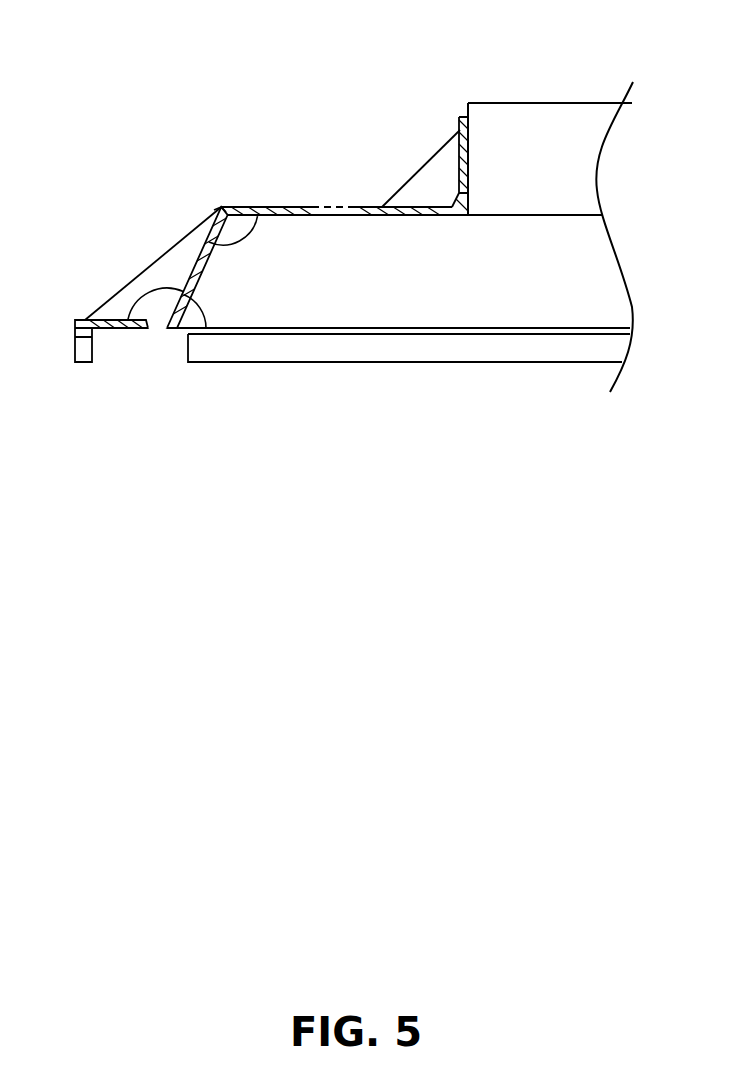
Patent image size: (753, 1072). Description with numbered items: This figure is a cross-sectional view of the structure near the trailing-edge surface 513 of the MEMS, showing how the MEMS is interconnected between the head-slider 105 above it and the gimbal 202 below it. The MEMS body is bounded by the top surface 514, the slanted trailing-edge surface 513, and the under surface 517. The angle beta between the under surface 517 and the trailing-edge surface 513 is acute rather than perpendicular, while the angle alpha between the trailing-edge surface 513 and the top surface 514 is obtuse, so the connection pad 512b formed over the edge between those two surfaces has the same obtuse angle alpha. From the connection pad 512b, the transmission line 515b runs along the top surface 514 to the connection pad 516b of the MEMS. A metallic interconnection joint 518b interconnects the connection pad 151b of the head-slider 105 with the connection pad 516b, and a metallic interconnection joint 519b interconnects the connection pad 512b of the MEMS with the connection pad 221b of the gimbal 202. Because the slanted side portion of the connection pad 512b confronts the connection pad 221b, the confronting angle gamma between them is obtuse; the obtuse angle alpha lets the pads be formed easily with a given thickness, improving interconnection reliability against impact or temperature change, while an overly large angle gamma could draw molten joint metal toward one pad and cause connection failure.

The head-slider 105 is at (533, 102).
The connection pad 151b is at (455, 117).
The top surface 514 is at (285, 217).
The transmission line 515b is at (333, 205).
The connection pad 516b is at (370, 203).
The metallic interconnection joint 518b is at (423, 172).
The trailing-edge surface 513 is at (183, 288).
The connection pad 512b is at (222, 205).
The metallic interconnection joint 519b is at (160, 257).
The connection pad 221b is at (80, 318).
The under surface 517 is at (182, 329).
The gimbal 202 is at (200, 365).